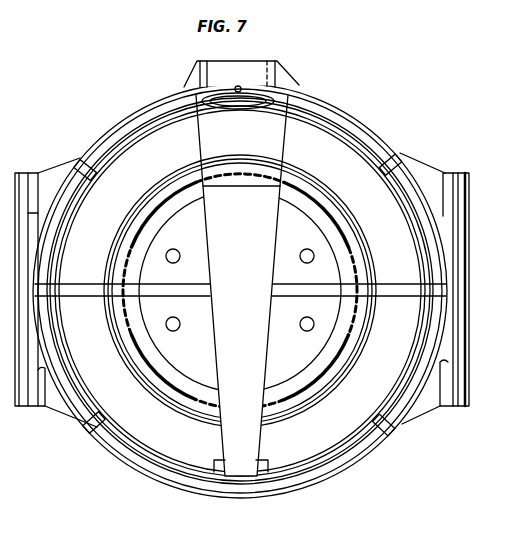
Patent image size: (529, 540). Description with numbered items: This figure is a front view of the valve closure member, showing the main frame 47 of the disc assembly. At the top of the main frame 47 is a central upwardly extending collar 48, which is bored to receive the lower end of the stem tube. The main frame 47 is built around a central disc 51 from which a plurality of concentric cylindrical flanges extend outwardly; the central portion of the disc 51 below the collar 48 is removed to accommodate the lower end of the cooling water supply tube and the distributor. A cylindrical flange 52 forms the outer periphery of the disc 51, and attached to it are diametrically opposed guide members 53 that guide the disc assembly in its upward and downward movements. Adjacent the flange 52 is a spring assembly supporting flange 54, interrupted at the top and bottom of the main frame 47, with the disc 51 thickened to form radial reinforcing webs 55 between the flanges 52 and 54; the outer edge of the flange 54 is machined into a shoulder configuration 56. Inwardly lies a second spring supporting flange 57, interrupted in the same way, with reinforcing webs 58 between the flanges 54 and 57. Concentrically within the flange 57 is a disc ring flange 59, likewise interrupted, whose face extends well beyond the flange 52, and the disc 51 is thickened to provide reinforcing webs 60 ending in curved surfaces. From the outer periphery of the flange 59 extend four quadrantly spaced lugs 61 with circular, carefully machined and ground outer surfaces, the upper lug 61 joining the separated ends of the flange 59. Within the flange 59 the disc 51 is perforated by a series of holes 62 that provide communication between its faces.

The main frame 47 is at (232, 506).
The collar 48 is at (284, 75).
The central disc 51 is at (332, 172).
The cylindrical flange 52 is at (340, 110).
The guide members 53 is at (462, 180).
The spring assembly supporting flange 54 is at (136, 131).
The radial reinforcing webs 55 is at (90, 170).
The shoulder configuration 56 is at (104, 166).
The second spring supporting flange 57 is at (362, 229).
The reinforcing webs 58 is at (194, 141).
The disc ring flange 59 is at (166, 372).
The reinforcing webs 60 is at (320, 290).
The lugs 61 is at (116, 280).
The holes 62 is at (173, 252).